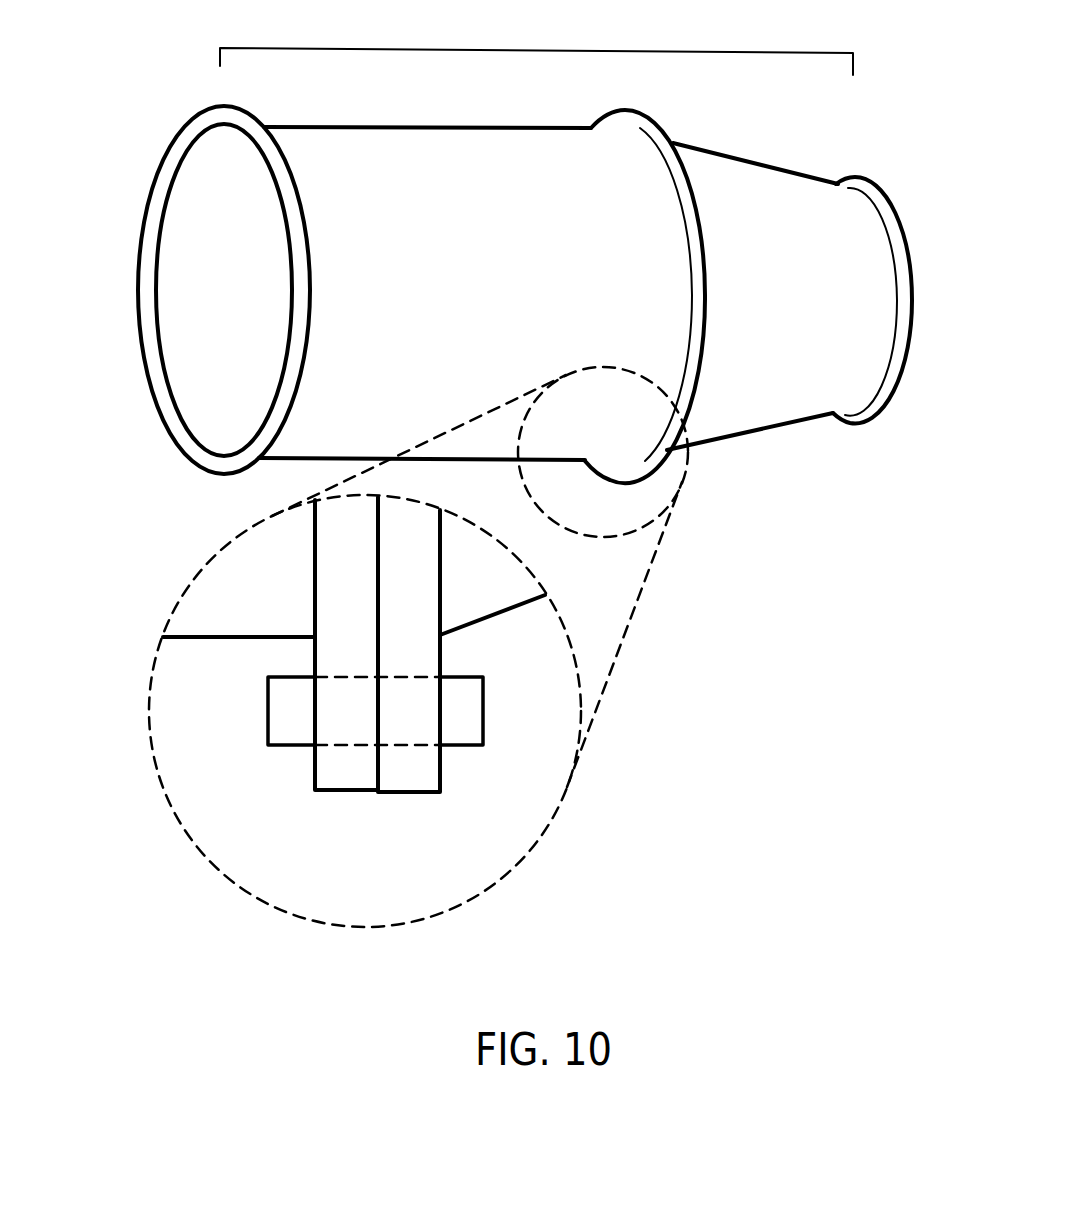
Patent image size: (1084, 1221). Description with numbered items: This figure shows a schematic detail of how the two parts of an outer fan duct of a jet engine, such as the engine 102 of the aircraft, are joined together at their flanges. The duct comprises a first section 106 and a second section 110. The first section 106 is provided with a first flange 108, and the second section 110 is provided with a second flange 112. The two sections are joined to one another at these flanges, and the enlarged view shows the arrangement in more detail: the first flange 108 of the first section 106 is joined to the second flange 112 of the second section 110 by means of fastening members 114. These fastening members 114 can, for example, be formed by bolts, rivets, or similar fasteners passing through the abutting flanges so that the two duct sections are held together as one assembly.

The first engine 102 is at (538, 50).
The first section 106 is at (457, 127).
The first flange 108 is at (607, 110).
The second section 110 is at (773, 168).
The second flange 112 is at (403, 792).
The fastening members 114 is at (462, 728).